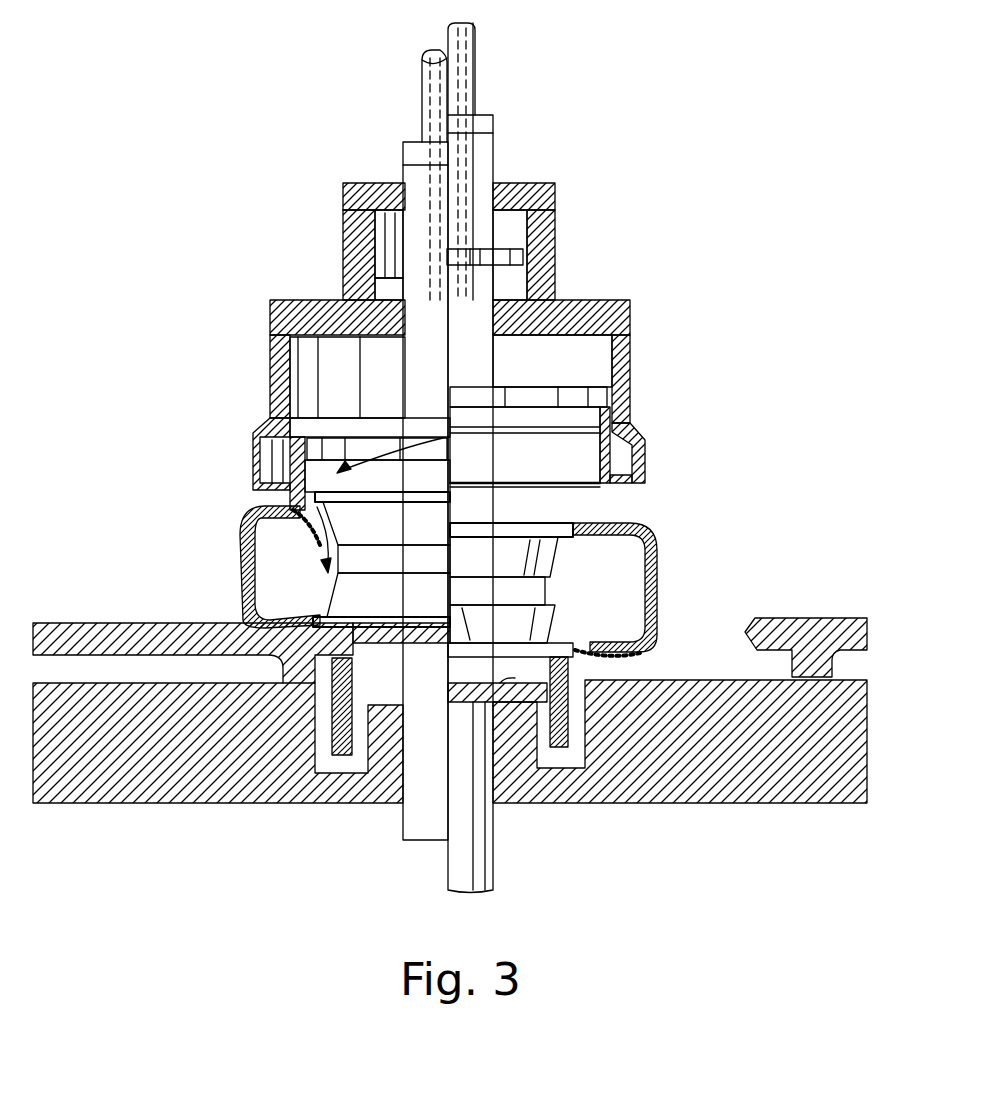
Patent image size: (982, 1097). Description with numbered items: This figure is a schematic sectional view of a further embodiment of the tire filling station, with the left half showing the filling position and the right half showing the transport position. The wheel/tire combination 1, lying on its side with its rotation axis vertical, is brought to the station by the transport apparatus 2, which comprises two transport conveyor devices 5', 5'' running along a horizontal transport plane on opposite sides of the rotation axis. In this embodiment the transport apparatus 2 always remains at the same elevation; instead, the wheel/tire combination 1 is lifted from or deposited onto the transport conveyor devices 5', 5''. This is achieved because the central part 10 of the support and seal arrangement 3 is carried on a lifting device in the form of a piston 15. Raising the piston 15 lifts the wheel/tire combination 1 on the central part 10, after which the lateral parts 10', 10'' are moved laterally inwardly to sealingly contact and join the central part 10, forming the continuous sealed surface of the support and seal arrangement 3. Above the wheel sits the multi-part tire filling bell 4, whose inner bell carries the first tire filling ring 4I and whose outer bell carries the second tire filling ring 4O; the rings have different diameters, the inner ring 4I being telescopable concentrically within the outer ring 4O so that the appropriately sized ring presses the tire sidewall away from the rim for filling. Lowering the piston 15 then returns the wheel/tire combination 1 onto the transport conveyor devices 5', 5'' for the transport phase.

The wheel/tire combination 1 is at (240, 548).
The transport apparatus 2 is at (340, 770).
The support and seal arrangement 3 is at (455, 605).
The tire filling bell 4 is at (490, 346).
The second tire filling ring 4O is at (630, 397).
The first tire filling ring 4I is at (640, 453).
The transport conveyor device 5' is at (362, 772).
The transport conveyor device 5'' is at (604, 761).
The central part 10 is at (530, 661).
The lateral part 10' is at (193, 609).
The lateral part 10'' is at (811, 602).
The piston 15 is at (463, 845).